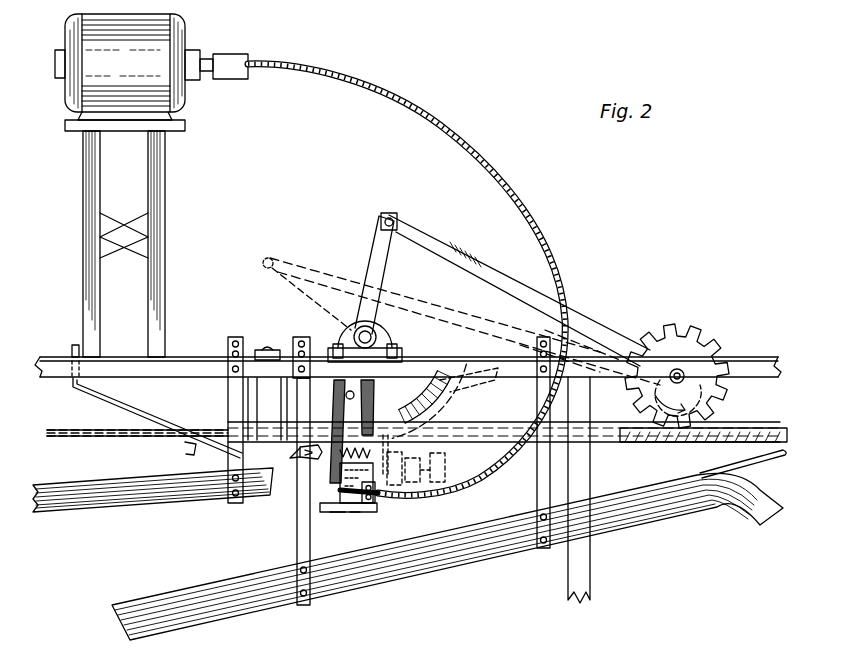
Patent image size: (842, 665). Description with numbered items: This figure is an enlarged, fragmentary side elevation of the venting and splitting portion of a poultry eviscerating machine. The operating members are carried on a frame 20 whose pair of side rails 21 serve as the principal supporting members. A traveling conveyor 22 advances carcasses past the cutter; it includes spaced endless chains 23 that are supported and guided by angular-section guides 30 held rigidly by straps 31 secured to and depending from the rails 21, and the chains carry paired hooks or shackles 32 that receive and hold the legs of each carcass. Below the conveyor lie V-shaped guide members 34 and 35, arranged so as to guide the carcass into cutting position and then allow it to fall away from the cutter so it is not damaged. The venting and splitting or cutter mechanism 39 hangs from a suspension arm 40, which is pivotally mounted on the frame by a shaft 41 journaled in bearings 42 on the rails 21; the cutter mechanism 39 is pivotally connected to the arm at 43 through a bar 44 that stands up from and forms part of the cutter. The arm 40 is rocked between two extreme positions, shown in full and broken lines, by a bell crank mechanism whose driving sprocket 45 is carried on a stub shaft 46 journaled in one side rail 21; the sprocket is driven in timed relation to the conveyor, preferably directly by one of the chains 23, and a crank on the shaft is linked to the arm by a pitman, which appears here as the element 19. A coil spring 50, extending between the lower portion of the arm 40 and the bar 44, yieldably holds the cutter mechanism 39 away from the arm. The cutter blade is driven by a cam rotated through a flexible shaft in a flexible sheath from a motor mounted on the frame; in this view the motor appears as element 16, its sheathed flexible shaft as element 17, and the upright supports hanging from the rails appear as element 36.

The motor 16 is at (162, 44).
The flexible drive cable 17 is at (537, 233).
The swinging arm 19 is at (597, 340).
The frame 20 is at (591, 562).
The side rails 21 is at (54, 368).
The traveling conveyor 22 is at (82, 446).
The endless chains 23 is at (85, 432).
The guides 30 is at (503, 447).
The straps 31 is at (267, 402).
The hooks or shackles 32 is at (187, 457).
The guide member 34 is at (103, 503).
The guide member 35 is at (200, 600).
The upright post 36 is at (230, 458).
The cutter mechanism 39 is at (346, 518).
The suspension arm 40 is at (400, 393).
The shaft 41 is at (345, 328).
The bearings 42 is at (380, 334).
The pivotal connection 43 is at (322, 365).
The bar 44 is at (385, 406).
The driving sprocket 45 is at (690, 345).
The stub shaft 46 is at (650, 390).
The coil spring 50 is at (318, 452).